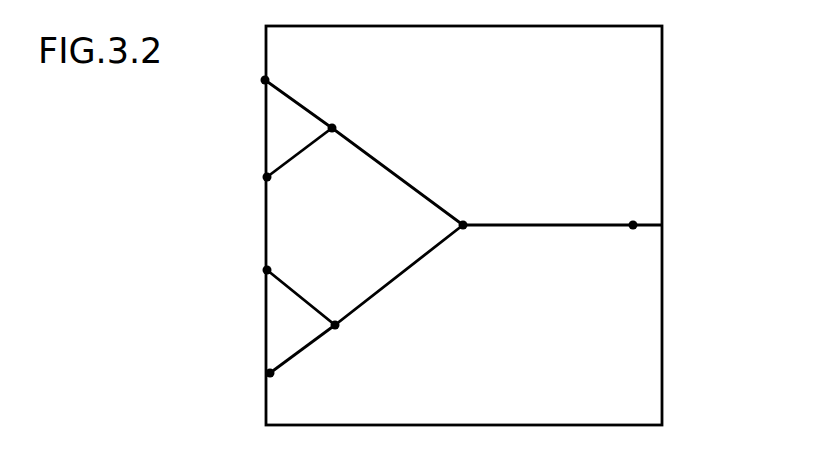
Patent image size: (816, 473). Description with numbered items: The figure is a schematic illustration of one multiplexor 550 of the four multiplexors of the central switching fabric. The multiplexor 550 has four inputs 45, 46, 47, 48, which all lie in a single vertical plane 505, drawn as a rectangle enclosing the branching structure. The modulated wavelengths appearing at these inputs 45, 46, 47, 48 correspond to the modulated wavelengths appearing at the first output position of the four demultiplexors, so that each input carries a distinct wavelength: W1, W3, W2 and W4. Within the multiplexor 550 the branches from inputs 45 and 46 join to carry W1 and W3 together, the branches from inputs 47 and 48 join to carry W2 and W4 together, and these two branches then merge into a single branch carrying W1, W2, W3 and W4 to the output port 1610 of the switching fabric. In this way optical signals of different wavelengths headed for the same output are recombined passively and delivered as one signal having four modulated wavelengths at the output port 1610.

The input 45 is at (263, 80).
The input 46 is at (265, 177).
The input 47 is at (265, 270).
The input 48 is at (268, 374).
The vertical plane 505 is at (664, 117).
The multiplexor 550 is at (430, 278).
The output port 1610 is at (634, 228).